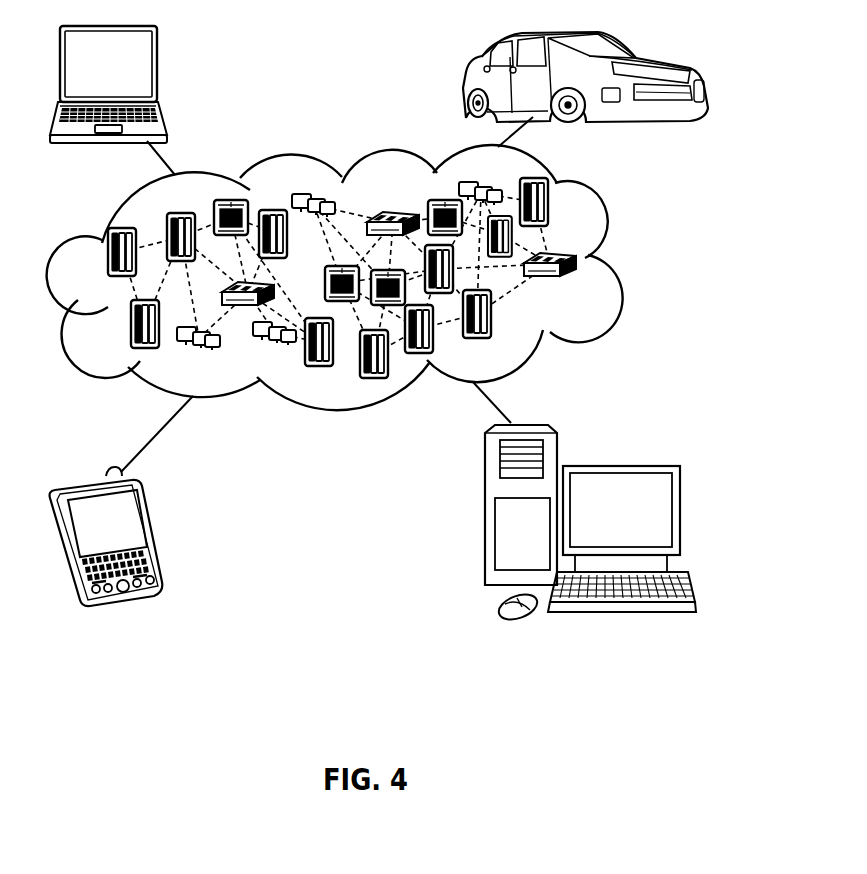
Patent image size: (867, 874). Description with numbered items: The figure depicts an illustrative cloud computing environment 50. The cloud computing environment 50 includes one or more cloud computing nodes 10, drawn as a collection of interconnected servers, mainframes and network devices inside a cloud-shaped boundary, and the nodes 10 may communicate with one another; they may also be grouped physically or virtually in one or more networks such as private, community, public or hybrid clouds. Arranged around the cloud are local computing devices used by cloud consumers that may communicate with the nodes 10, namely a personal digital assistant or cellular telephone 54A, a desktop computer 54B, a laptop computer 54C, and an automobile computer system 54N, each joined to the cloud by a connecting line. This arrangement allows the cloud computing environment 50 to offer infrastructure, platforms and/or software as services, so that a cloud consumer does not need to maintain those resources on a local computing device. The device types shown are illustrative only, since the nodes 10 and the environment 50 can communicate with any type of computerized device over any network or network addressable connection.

The cloud computing node 10 is at (586, 291).
The cloud computing environment 50 is at (613, 258).
The personal digital assistant or cellular telephone 54A is at (152, 530).
The desktop computer 54B is at (617, 466).
The laptop computer 54C is at (158, 68).
The automobile computer system 54N is at (464, 80).